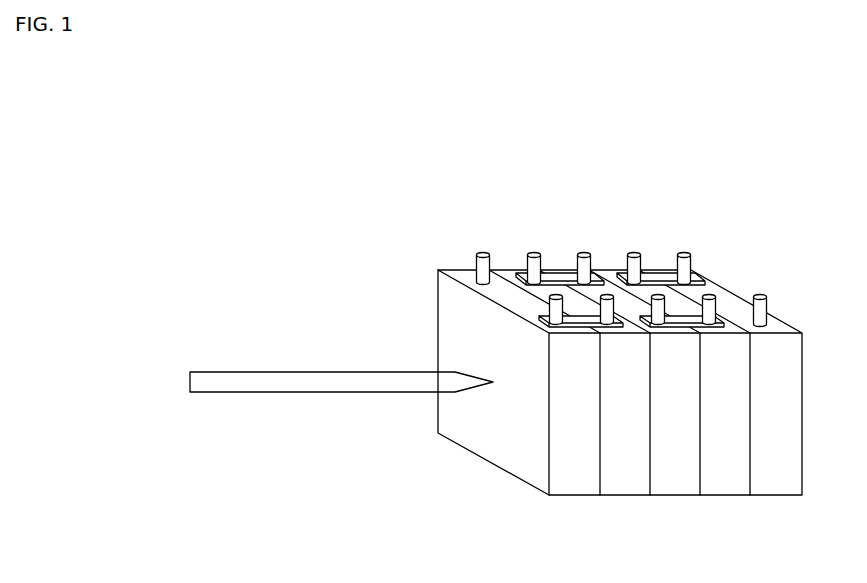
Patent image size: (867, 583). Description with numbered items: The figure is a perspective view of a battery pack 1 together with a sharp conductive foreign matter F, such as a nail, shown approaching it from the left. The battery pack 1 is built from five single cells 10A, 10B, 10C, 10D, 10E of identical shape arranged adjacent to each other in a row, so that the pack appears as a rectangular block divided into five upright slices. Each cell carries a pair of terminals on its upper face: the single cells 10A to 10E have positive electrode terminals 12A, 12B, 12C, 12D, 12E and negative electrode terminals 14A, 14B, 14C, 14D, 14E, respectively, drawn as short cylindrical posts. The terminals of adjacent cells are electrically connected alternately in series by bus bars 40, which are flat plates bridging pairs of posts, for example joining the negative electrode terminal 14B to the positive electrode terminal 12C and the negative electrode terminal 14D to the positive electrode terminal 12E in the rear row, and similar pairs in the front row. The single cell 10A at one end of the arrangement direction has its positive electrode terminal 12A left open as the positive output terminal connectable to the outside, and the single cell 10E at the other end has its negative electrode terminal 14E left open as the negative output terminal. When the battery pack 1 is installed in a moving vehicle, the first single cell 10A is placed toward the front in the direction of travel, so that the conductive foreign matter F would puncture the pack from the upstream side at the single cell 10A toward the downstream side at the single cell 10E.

The battery pack 1 is at (363, 225).
The conductive foreign matter F is at (311, 377).
The single cell 10A is at (567, 497).
The single cell 10B is at (627, 497).
The single cell 10C is at (670, 497).
The single cell 10D is at (723, 497).
The single cell 10E is at (773, 497).
The positive electrode terminal 12A is at (483, 253).
The positive electrode terminal 12B is at (601, 319).
The positive electrode terminal 12C is at (584, 253).
The positive electrode terminal 12D is at (712, 328).
The positive electrode terminal 12E is at (684, 253).
The negative electrode terminal 14A is at (548, 307).
The negative electrode terminal 14B is at (534, 253).
The negative electrode terminal 14C is at (663, 327).
The negative electrode terminal 14D is at (634, 253).
The negative electrode terminal 14E is at (767, 298).
The bus bar 40 is at (582, 318).